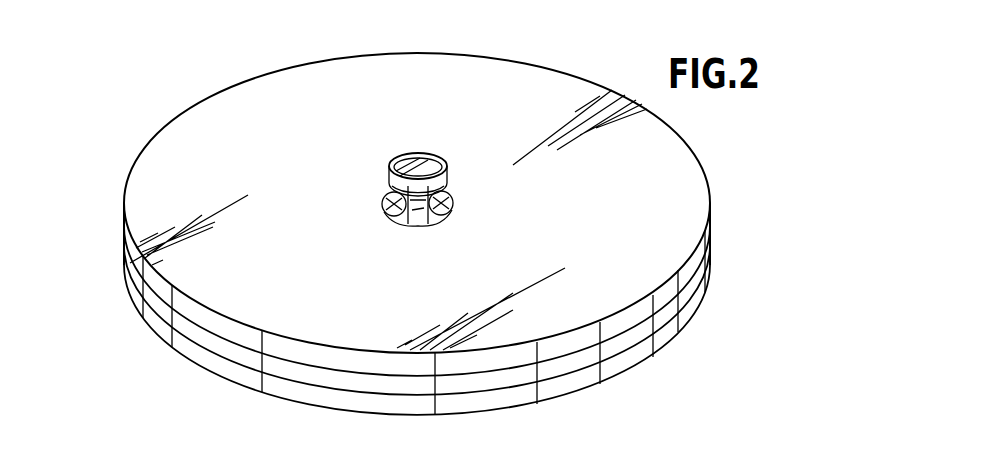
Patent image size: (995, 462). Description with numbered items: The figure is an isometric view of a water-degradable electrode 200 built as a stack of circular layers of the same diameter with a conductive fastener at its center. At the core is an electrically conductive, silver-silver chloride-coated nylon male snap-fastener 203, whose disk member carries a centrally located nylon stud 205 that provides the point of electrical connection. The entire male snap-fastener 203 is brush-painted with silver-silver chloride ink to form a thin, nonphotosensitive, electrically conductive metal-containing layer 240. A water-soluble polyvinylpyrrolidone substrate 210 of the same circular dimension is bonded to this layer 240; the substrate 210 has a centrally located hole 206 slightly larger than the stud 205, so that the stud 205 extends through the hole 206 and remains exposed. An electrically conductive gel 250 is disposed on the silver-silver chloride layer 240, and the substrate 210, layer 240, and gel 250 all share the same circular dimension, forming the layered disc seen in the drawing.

The electrode 200 is at (112, 130).
The substrate 210 is at (150, 202).
The male snap-fastener 203 is at (368, 174).
The stud 205 is at (430, 164).
The hole 206 is at (450, 200).
The metal-containing layer 240 is at (676, 311).
The electrically conductive gel 250 is at (583, 385).